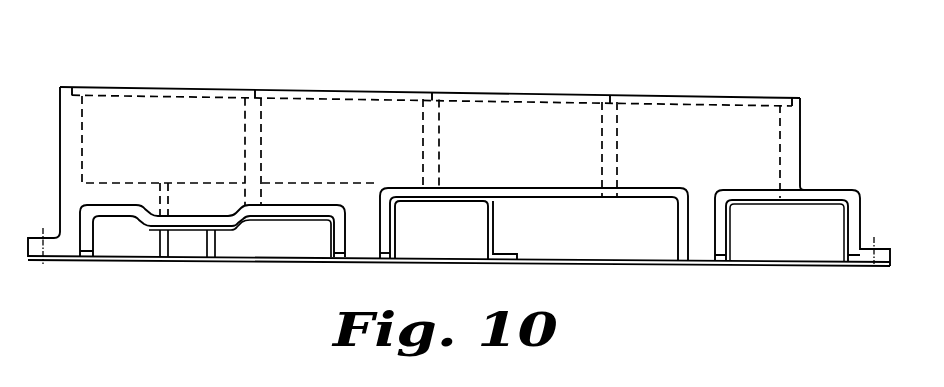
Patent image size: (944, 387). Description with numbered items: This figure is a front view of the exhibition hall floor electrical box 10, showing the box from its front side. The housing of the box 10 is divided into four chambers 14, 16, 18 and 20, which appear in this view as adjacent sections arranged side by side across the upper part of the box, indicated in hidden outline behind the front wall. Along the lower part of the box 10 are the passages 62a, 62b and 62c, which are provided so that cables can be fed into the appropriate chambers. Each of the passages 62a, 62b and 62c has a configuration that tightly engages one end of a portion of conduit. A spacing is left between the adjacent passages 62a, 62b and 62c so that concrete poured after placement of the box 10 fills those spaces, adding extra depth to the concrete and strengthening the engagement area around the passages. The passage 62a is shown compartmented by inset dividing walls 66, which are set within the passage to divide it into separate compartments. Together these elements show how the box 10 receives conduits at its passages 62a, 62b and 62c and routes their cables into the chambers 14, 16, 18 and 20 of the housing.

The exhibition hall floor electrical box 10 is at (840, 133).
The chamber 14 is at (168, 89).
The chamber 16 is at (340, 95).
The chamber 18 is at (517, 98).
The chamber 20 is at (703, 100).
The passage 62a is at (273, 233).
The passage 62b is at (462, 248).
The passage 62c is at (790, 233).
The inset dividing wall 66 is at (208, 246).